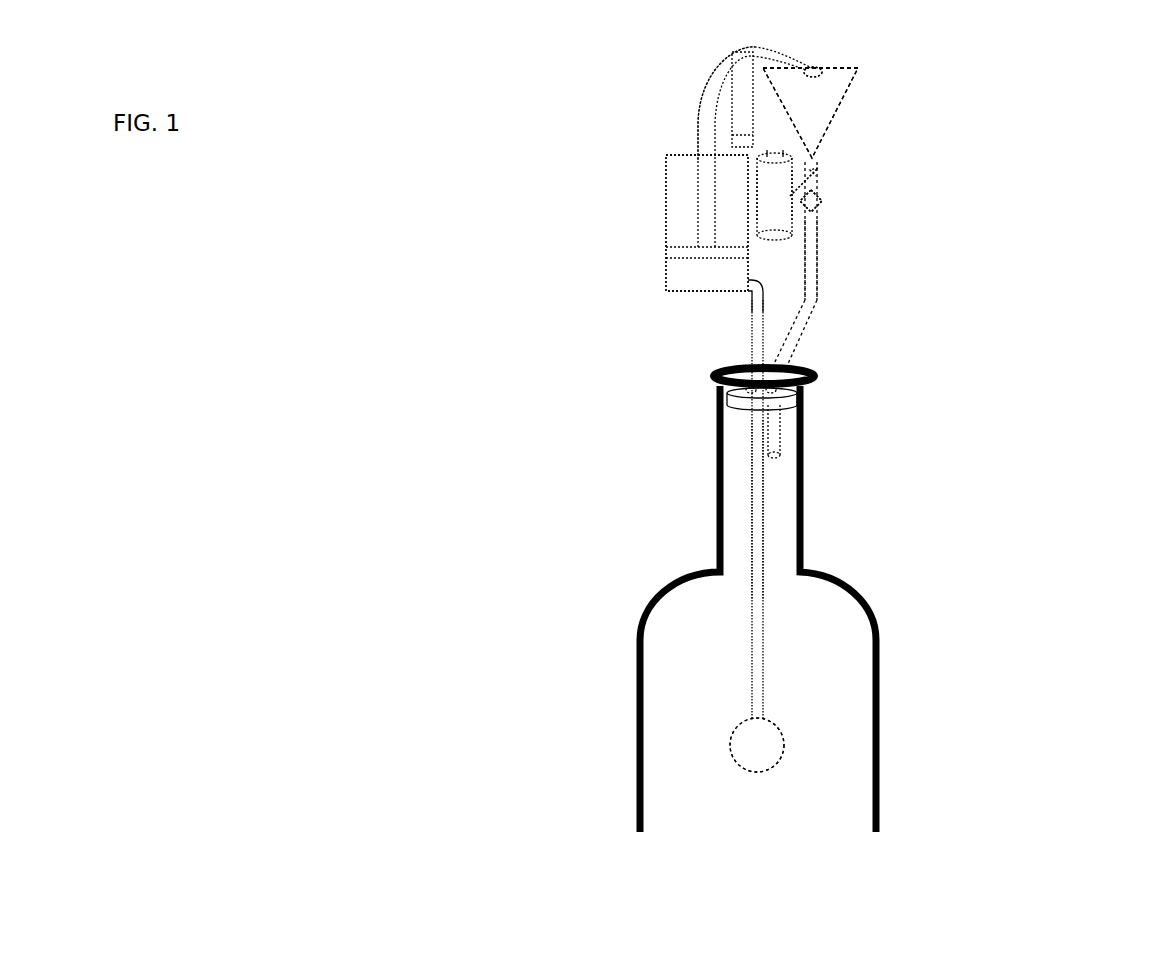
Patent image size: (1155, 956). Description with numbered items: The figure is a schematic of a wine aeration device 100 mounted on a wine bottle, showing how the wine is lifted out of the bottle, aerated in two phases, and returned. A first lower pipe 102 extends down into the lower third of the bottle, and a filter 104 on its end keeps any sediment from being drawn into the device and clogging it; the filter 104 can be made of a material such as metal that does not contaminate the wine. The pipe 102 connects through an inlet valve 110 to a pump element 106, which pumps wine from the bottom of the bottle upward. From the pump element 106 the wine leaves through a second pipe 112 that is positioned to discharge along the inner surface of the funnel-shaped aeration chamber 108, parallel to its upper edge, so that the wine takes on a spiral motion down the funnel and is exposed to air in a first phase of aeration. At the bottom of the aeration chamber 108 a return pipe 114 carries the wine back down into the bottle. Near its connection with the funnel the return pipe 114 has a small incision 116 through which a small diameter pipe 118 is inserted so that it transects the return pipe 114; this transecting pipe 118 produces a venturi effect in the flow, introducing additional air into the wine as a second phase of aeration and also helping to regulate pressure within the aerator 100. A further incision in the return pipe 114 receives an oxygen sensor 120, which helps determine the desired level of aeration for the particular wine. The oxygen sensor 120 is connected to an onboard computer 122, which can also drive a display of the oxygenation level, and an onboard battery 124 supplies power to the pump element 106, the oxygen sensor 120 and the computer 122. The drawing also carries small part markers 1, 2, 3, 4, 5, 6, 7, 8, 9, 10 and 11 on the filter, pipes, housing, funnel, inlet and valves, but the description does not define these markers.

The wine aeration device 100 is at (480, 158).
The pipe 102 is at (758, 558).
The filter 104 is at (740, 737).
The pump element 106 is at (683, 272).
The aeration chamber 108 is at (818, 100).
The inlet valve 110 is at (747, 280).
The second pipe 112 is at (785, 59).
The return pipe 114 is at (780, 438).
The small incision 116 is at (818, 172).
The small diameter pipe 118 is at (818, 172).
The oxygen sensor 120 is at (820, 203).
The onboard computer 122 is at (745, 117).
The battery 124 is at (758, 212).
The weight 1 is at (757, 745).
The tube 2 is at (756, 510).
The housing 3 is at (707, 223).
The tube 4 is at (726, 103).
The inlet 5 is at (811, 57).
The funnel 6 is at (810, 113).
The tube 7 is at (811, 260).
The valve 8 is at (816, 175).
The valve 9 is at (821, 203).
The cartridge 10 is at (775, 195).
The chamber 11 is at (744, 99).